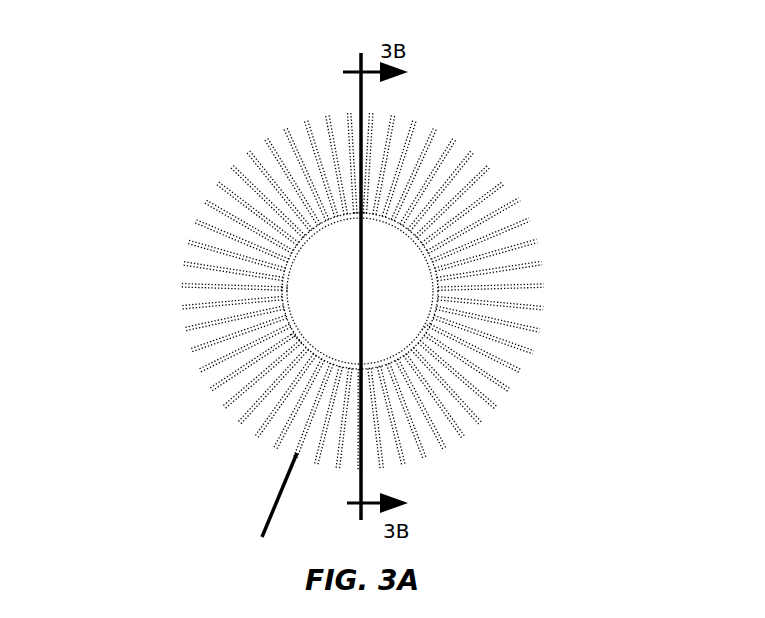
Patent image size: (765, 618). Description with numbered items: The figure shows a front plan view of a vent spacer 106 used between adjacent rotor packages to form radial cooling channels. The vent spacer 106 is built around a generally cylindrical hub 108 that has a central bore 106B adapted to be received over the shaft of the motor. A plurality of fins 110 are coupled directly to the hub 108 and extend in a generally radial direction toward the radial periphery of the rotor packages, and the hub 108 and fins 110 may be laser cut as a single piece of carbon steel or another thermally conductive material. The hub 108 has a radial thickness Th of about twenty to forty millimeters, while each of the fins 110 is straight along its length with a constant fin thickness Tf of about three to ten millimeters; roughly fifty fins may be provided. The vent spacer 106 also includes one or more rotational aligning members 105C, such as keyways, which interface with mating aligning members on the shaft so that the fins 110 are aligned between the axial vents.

The vent spacer 106 is at (437, 113).
The central bore 106B is at (418, 289).
The hub 108 is at (430, 254).
The fins 110 is at (483, 172).
The rotational aligning members 105C is at (360, 213).
The radial thickness of hub Th is at (327, 292).
The fin thickness Tf is at (300, 527).